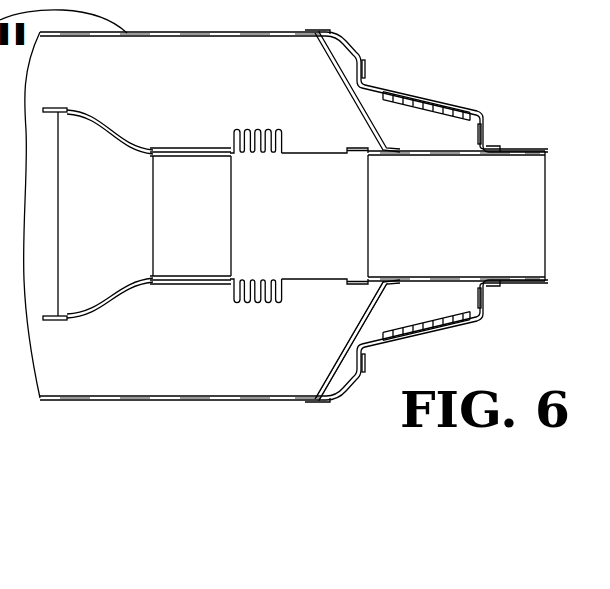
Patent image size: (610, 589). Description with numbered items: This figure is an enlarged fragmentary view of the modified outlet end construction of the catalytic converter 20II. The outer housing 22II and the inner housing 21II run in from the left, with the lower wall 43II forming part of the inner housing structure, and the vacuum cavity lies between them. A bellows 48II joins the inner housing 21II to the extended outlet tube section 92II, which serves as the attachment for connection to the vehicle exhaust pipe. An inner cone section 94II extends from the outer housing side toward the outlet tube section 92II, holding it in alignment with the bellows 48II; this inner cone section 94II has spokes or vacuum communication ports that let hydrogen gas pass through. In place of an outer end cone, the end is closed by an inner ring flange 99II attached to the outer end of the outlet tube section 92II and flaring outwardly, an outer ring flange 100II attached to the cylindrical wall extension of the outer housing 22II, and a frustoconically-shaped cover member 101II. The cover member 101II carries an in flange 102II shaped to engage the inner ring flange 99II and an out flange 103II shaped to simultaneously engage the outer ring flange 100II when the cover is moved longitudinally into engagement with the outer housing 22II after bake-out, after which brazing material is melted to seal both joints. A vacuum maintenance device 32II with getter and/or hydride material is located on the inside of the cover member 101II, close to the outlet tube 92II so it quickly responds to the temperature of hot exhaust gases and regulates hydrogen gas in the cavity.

The outer ring flange 100II is at (355, 57).
The catalytic converter 20II is at (425, 34).
The out flange 103II is at (364, 70).
The in flange 102II is at (583, 73).
The frustoconically-shaped member 101II is at (448, 104).
The inner ring flange 99II is at (493, 151).
The extended outlet tube section 92II is at (437, 157).
The inner housing 21II is at (140, 102).
The bellows 48II is at (242, 127).
The vacuum maintenance device 32II is at (405, 117).
The lower curved pipe wall 43II is at (113, 310).
The inner cone section 94II is at (357, 333).
The outer housing 22II is at (190, 410).